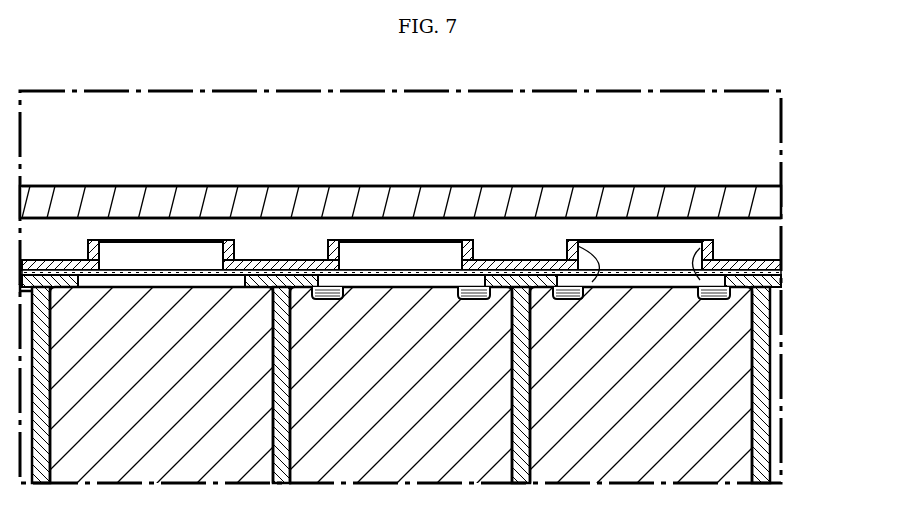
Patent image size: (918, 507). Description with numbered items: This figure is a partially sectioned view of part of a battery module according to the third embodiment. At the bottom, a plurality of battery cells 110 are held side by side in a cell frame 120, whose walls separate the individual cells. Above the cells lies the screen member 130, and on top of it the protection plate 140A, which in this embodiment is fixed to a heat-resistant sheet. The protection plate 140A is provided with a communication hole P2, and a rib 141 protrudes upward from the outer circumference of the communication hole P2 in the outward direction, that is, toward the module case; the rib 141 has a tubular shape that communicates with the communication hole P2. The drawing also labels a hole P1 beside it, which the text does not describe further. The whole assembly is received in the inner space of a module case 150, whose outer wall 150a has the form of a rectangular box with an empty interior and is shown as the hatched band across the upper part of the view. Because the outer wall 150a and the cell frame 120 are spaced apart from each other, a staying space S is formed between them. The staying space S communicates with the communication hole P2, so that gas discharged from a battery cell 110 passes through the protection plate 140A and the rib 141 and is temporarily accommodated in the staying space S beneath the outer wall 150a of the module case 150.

The battery cell 110 is at (725, 372).
The cell frame 120 is at (765, 321).
The screen member 130 is at (770, 284).
The protection plate 140A is at (781, 260).
The rib 141 is at (476, 246).
The module case 150 is at (122, 148).
The outer wall 150a is at (163, 186).
The staying space S is at (280, 233).
The first portion P1 is at (570, 247).
The communication hole P2 is at (708, 247).